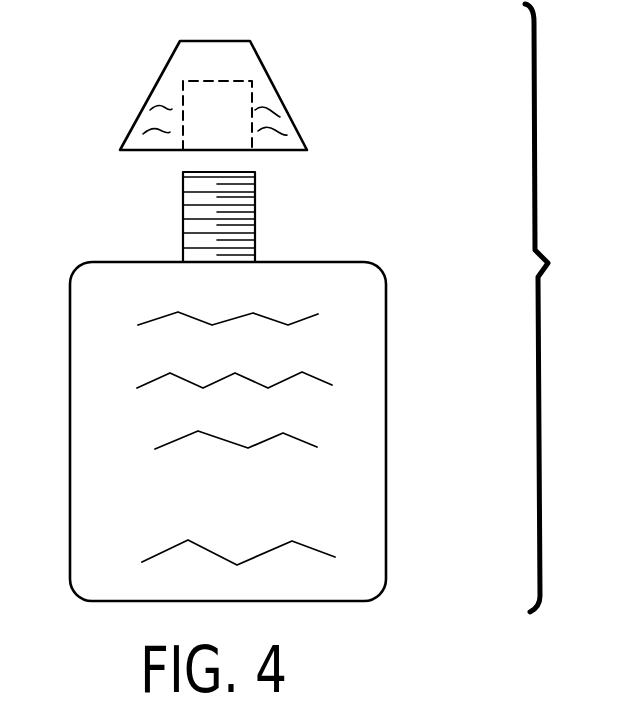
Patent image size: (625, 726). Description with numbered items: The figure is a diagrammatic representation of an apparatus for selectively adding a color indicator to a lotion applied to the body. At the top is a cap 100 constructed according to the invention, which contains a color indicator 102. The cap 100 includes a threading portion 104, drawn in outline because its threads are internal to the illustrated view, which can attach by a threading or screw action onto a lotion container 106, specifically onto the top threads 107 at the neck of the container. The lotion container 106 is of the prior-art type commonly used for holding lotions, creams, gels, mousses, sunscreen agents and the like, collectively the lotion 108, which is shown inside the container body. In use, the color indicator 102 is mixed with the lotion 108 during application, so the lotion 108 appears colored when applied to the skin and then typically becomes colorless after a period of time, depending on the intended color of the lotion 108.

The cap 100 is at (295, 118).
The color indicator 102 is at (146, 102).
The threading portion 104 is at (207, 80).
The lotion container 106 is at (387, 397).
The top threads 107 is at (257, 209).
The lotion 108 is at (250, 502).